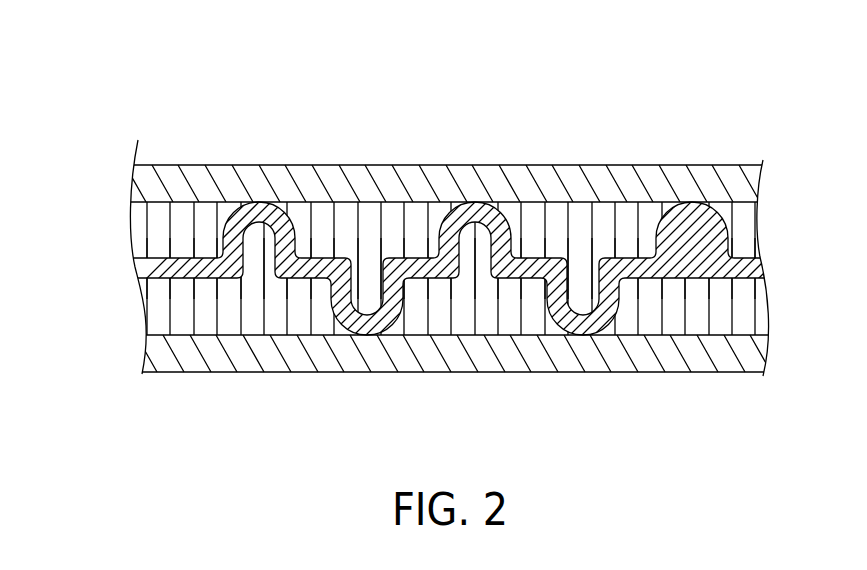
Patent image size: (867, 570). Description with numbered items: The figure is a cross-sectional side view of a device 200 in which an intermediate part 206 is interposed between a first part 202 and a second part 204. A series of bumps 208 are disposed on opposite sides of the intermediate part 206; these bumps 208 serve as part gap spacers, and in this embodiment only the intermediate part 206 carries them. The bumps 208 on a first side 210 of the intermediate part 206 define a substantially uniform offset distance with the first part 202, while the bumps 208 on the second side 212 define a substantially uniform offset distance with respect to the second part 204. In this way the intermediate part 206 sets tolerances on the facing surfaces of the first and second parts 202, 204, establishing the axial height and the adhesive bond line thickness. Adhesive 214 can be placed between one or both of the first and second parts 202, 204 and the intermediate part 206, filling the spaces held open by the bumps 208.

The device 200 is at (118, 77).
The first part 202 is at (453, 183).
The second part 204 is at (459, 353).
The intermediate part 206 is at (451, 286).
The bumps 208 is at (473, 270).
The first side 210 is at (451, 250).
The second side 212 is at (452, 268).
The adhesive 214 is at (165, 213).